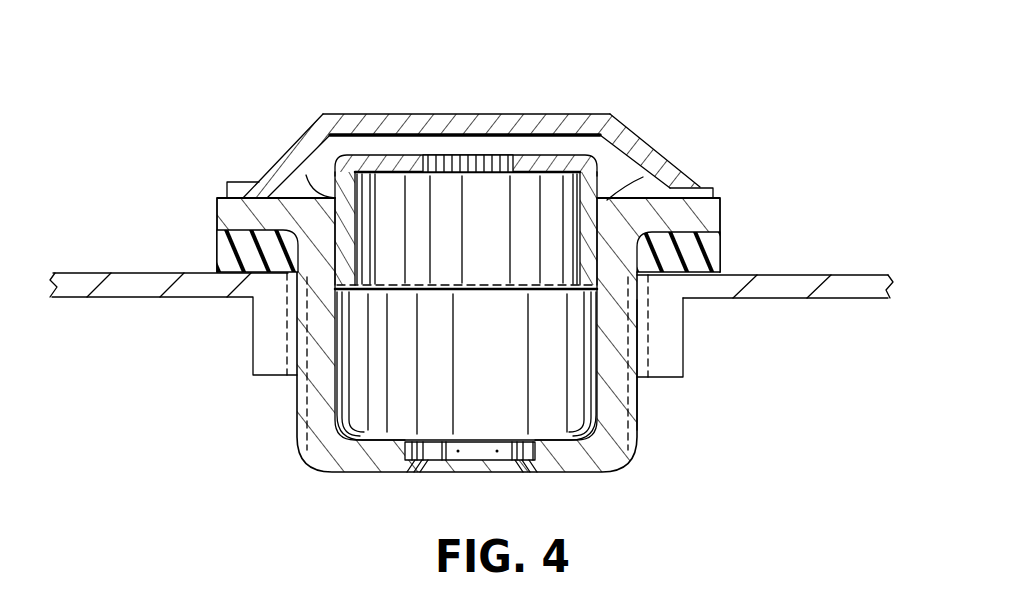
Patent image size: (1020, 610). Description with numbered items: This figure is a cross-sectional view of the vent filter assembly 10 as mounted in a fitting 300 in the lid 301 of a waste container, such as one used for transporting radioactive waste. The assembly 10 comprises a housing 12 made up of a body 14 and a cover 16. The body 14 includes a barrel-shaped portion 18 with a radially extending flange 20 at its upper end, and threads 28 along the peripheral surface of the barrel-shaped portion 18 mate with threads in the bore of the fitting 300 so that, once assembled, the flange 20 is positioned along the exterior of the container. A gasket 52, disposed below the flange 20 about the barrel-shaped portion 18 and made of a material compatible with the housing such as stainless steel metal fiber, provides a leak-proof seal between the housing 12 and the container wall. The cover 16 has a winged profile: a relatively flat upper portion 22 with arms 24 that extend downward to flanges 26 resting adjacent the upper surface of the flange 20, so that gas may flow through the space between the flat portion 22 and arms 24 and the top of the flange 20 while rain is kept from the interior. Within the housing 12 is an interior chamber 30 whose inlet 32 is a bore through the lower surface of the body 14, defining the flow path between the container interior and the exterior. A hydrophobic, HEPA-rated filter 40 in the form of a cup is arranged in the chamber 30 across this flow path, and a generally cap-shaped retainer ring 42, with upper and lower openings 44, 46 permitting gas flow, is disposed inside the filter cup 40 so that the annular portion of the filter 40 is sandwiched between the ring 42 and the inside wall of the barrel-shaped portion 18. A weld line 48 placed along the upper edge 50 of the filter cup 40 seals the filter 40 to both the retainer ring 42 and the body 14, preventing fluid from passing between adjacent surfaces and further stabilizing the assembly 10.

The vent filter assembly 10 is at (682, 124).
The housing 12 is at (738, 215).
The body 14 is at (297, 382).
The cover 16 is at (714, 190).
The barrel-shaped portion 18 is at (640, 430).
The flange 20 is at (217, 218).
The flat upper portion 22 is at (365, 123).
The arms 24 is at (337, 188).
The flanges 26 is at (227, 190).
The threads 28 is at (640, 392).
The interior chamber 30 is at (347, 393).
The inlet 32 is at (410, 470).
The filter 40 is at (403, 294).
The retainer ring 42 is at (623, 114).
The upper opening 44 is at (565, 292).
The lower opening 46 is at (500, 157).
The weld line 48 is at (643, 177).
The upper edge 50 is at (335, 198).
The gasket 52 is at (722, 256).
The fitting 300 is at (670, 338).
The lid 301 is at (847, 292).